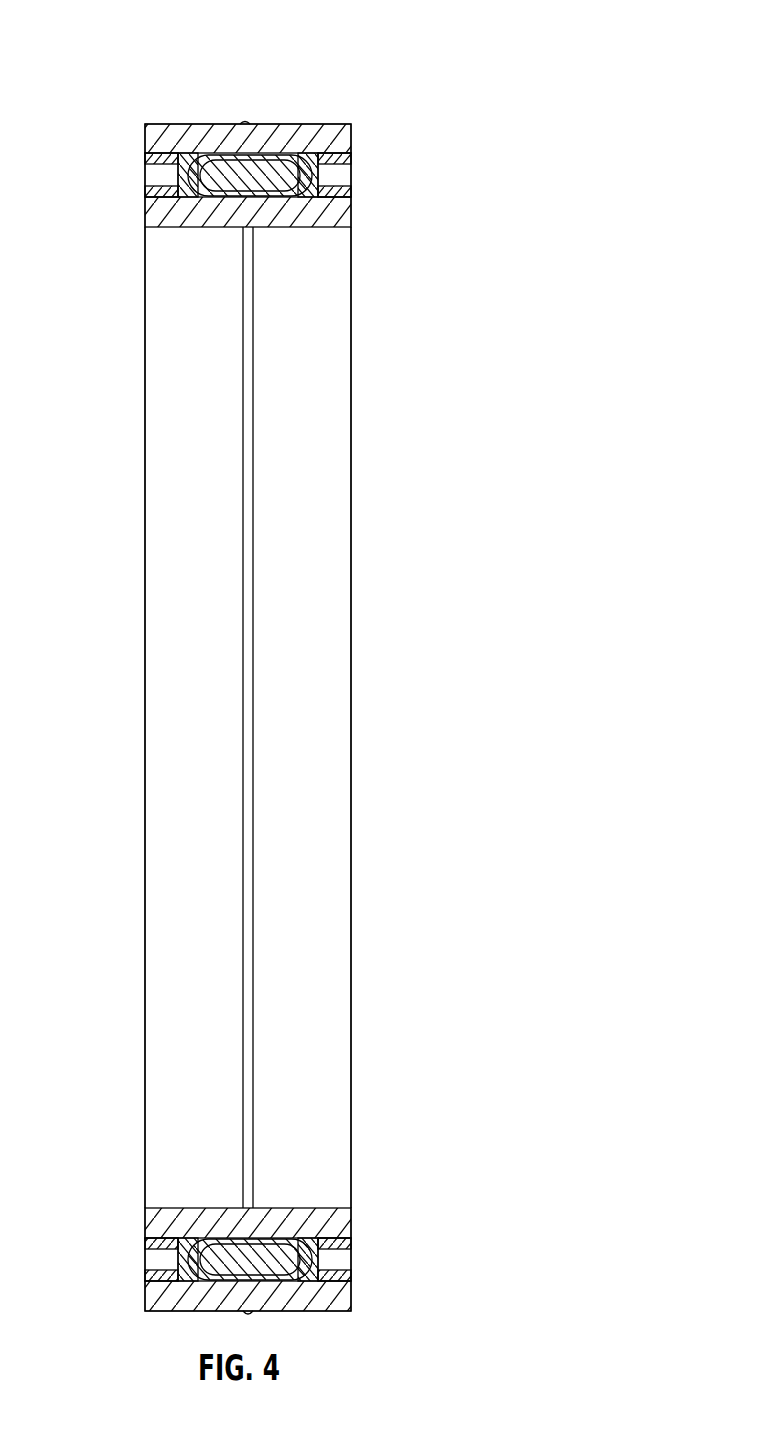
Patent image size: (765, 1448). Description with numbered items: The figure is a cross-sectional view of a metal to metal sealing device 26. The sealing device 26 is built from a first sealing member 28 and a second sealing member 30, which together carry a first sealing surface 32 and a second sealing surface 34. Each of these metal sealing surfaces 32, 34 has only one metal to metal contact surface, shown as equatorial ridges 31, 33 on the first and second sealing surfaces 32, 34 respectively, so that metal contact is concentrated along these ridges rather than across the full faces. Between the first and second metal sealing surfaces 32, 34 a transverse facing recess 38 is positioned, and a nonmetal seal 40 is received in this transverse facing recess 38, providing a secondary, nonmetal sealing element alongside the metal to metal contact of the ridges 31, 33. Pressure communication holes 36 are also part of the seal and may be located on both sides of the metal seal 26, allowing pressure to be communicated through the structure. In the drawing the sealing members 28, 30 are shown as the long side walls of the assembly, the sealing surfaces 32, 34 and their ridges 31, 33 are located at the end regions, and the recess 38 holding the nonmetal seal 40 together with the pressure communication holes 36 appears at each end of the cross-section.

The sealing device 26 is at (106, 60).
The first sealing member 28 is at (145, 735).
The second sealing member 30 is at (352, 695).
The equatorial ridge 31 is at (247, 124).
The first sealing surface 32 is at (282, 125).
The equatorial ridge 33 is at (253, 515).
The second sealing surface 34 is at (313, 608).
The pressure communication holes 36 is at (160, 176).
The transverse facing recess 38 is at (190, 158).
The nonmetal seal 40 is at (240, 160).